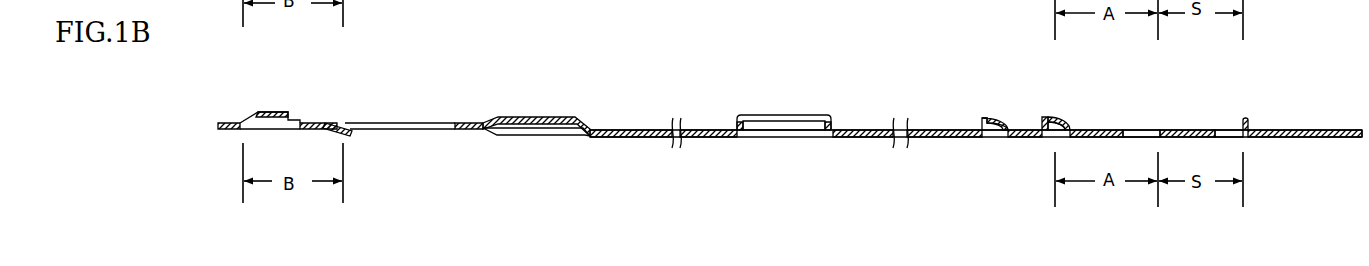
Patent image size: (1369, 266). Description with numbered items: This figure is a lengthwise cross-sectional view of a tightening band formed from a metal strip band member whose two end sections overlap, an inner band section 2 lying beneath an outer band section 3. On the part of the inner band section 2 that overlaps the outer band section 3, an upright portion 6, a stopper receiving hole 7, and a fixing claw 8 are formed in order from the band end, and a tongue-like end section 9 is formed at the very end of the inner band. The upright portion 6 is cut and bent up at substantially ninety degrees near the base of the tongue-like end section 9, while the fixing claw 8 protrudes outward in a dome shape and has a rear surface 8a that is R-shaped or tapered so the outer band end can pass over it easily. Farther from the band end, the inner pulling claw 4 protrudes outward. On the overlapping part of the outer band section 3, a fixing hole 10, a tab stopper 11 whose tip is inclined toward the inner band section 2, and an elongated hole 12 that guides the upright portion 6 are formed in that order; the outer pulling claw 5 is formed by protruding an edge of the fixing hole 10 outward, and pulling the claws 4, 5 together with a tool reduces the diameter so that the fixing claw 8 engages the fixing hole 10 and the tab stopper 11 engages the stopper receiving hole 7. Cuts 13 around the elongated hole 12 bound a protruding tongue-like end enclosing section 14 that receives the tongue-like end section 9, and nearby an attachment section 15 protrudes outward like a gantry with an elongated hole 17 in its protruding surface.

The inner band section 2 is at (1190, 130).
The outer band section 3 is at (310, 122).
The inner pulling claw 4 is at (985, 118).
The outer pulling claw 5 is at (272, 112).
The upright portion 6 is at (1245, 118).
The stopper receiving hole 7 is at (1140, 130).
The fixing claw 8 is at (1048, 117).
The surface of fixing claw 8a is at (1062, 128).
The tongue-like end section 9 is at (1330, 130).
The fixing hole 10 is at (250, 122).
The tab stopper 11 is at (337, 125).
The elongated hole 12 is at (412, 123).
The cuts 13 is at (555, 0).
The tongue-like end enclosing section 14 is at (543, 125).
The attachment section 15 is at (772, 126).
The elongated hole 17 is at (795, 116).